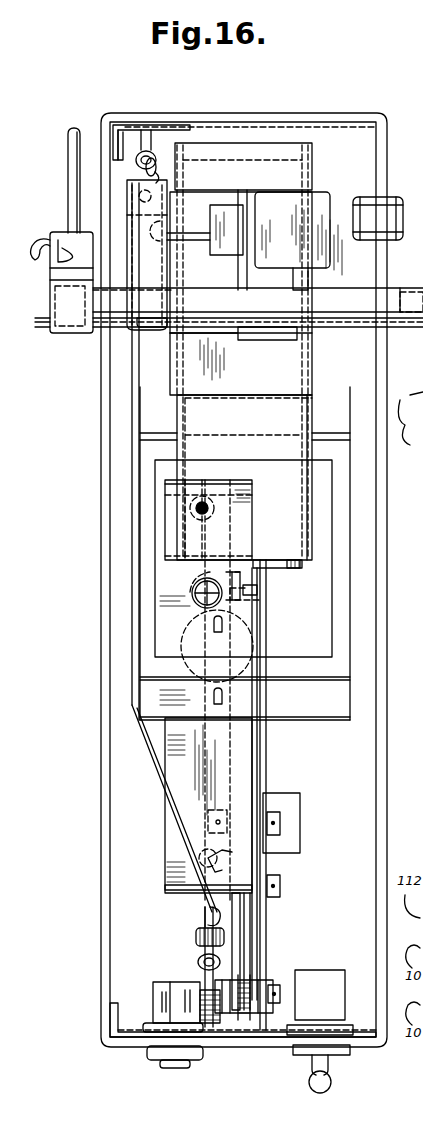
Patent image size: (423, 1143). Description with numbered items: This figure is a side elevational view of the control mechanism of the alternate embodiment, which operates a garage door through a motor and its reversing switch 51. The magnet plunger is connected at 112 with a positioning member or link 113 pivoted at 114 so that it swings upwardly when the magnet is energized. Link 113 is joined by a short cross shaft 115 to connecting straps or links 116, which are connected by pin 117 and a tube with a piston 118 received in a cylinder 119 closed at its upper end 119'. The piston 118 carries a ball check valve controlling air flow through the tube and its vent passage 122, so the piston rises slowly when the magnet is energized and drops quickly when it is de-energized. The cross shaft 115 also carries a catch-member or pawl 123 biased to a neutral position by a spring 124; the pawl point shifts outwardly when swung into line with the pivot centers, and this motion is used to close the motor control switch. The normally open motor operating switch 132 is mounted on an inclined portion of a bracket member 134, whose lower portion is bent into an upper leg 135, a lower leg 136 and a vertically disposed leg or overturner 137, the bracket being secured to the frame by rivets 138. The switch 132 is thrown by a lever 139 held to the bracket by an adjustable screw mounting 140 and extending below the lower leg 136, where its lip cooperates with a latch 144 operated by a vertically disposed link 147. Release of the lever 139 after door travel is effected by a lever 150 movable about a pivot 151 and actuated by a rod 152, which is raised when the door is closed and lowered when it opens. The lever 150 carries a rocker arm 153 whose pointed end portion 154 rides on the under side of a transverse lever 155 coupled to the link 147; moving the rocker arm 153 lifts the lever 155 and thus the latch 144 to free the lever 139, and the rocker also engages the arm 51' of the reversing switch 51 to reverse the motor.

The rod 152 is at (68, 140).
The transverse lever 155 is at (132, 140).
The upper end of cylinder 119' is at (243, 136).
The pointed end portion 154 is at (157, 174).
The rocker arm 153 is at (168, 255).
The reversing switch 51 is at (292, 230).
The arm of reversing switch 51' is at (219, 243).
The pivot 151 is at (391, 300).
The lever 150 is at (68, 337).
The link 147 is at (128, 380).
The cylinder 119 is at (244, 464).
The positioning member or link 113 is at (240, 927).
The rivets 138 is at (210, 500).
The pin 117 is at (256, 572).
The adjustable screw mounting 140 is at (213, 578).
The vent passage 122 is at (294, 598).
The piston 118 is at (302, 565).
The motor operating switch 132 is at (248, 617).
The connecting straps or links 116 is at (248, 637).
The bracket member 134 is at (173, 610).
The upper leg 135 is at (173, 717).
The pivot 114 is at (277, 822).
The vertically disposed leg or overturner 137 is at (173, 783).
The lever 139 is at (207, 809).
The connection 112 is at (280, 880).
The lower leg 136 is at (167, 895).
The latch 144 is at (200, 910).
The spring 124 is at (197, 937).
The cross shaft 115 is at (280, 980).
The catch-member or pawl 123 is at (220, 1040).